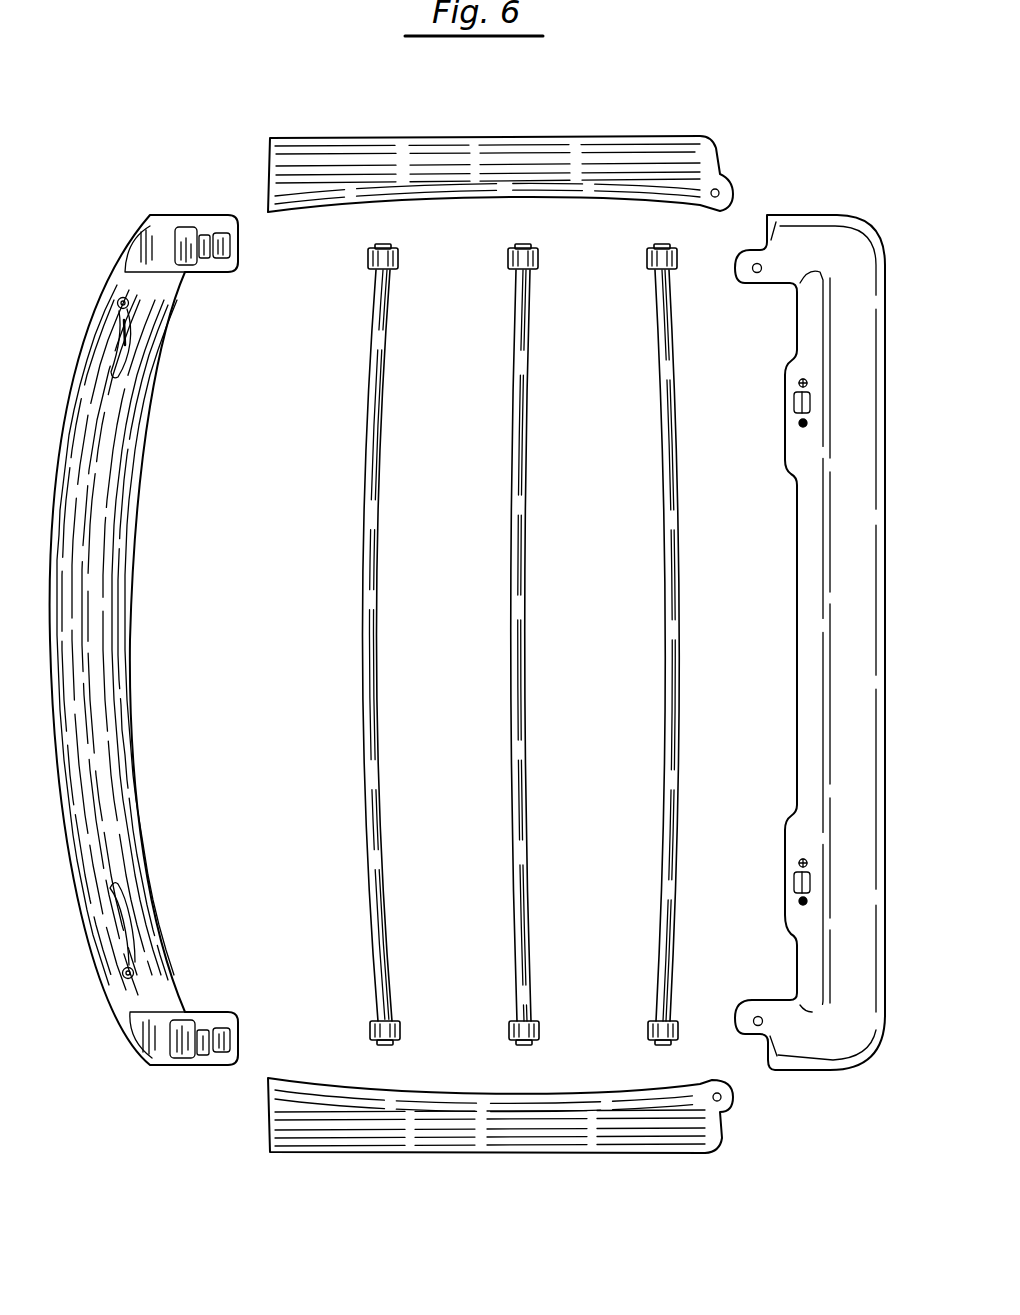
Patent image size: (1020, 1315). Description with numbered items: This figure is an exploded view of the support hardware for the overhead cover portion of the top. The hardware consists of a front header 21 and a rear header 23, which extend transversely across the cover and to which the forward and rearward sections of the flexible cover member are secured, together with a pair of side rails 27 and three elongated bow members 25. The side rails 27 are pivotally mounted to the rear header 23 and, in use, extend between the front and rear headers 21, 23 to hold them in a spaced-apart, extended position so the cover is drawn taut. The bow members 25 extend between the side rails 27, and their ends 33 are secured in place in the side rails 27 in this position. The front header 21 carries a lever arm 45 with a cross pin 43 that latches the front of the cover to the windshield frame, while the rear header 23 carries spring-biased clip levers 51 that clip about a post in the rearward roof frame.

The front header 21 is at (93, 593).
The rear header 23 is at (848, 624).
The bow members 25 is at (365, 678).
The side rails 27 is at (543, 160).
The ends of the bow members 33 is at (367, 258).
The cross pin 43 is at (117, 290).
The lever arm 45 is at (133, 363).
The levers 51 is at (792, 407).